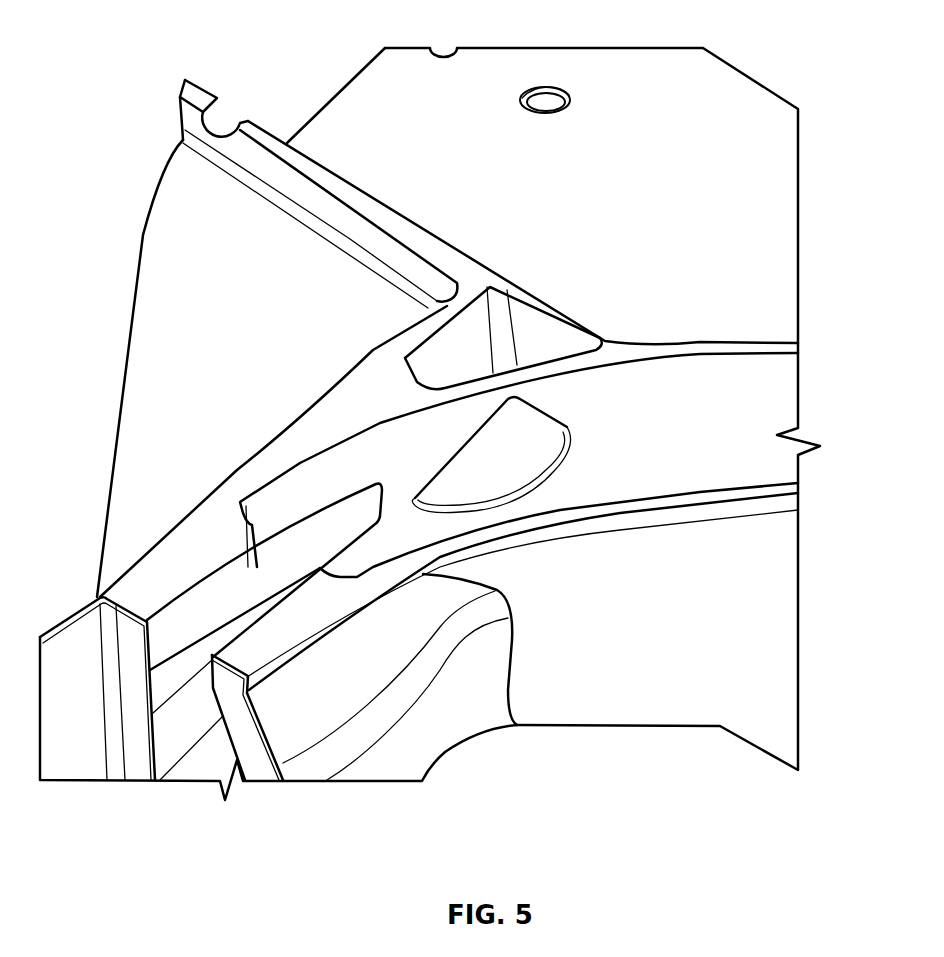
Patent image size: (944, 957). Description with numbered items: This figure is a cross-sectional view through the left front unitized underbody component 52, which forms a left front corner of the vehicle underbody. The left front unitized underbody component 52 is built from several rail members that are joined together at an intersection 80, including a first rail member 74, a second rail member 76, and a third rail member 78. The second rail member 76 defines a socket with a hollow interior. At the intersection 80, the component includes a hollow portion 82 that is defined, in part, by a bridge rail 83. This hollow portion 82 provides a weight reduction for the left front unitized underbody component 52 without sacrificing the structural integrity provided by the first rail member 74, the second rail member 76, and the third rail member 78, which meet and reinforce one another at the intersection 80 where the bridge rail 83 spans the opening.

The left front unitized underbody component 52 is at (802, 711).
The first rail member 74 is at (63, 753).
The second rail member 76 is at (800, 577).
The third rail member 78 is at (258, 167).
The intersection 80 is at (583, 664).
The hollow portion 82 is at (547, 345).
The bridge rail 83 is at (654, 428).